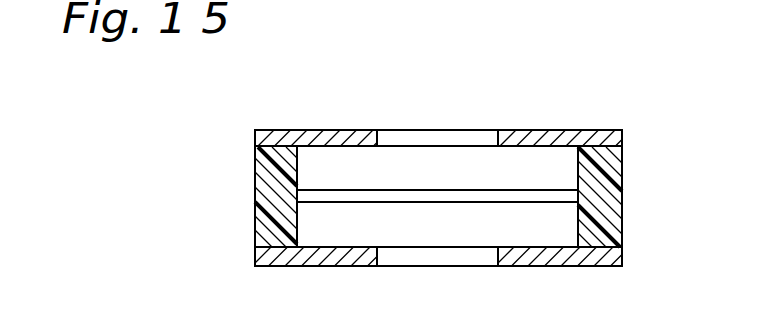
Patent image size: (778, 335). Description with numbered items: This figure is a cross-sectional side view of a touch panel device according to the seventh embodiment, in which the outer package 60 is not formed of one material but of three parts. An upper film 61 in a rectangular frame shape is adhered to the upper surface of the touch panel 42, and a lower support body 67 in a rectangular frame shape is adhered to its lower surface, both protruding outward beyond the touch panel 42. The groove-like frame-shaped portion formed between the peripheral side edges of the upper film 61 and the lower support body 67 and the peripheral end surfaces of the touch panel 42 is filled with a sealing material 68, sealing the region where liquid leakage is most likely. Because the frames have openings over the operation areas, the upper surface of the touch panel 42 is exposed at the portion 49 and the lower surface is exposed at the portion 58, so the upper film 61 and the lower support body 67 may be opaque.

The outer package 60 is at (254, 152).
The upper film 61 is at (333, 134).
The exposed portion of the upper surface of the touch panel 49 is at (435, 133).
The sealing material 68 is at (263, 215).
The lower support body 67 is at (328, 254).
The exposed portion of the lower surface of the touch panel 58 is at (400, 255).
The touch panel 42 is at (462, 240).